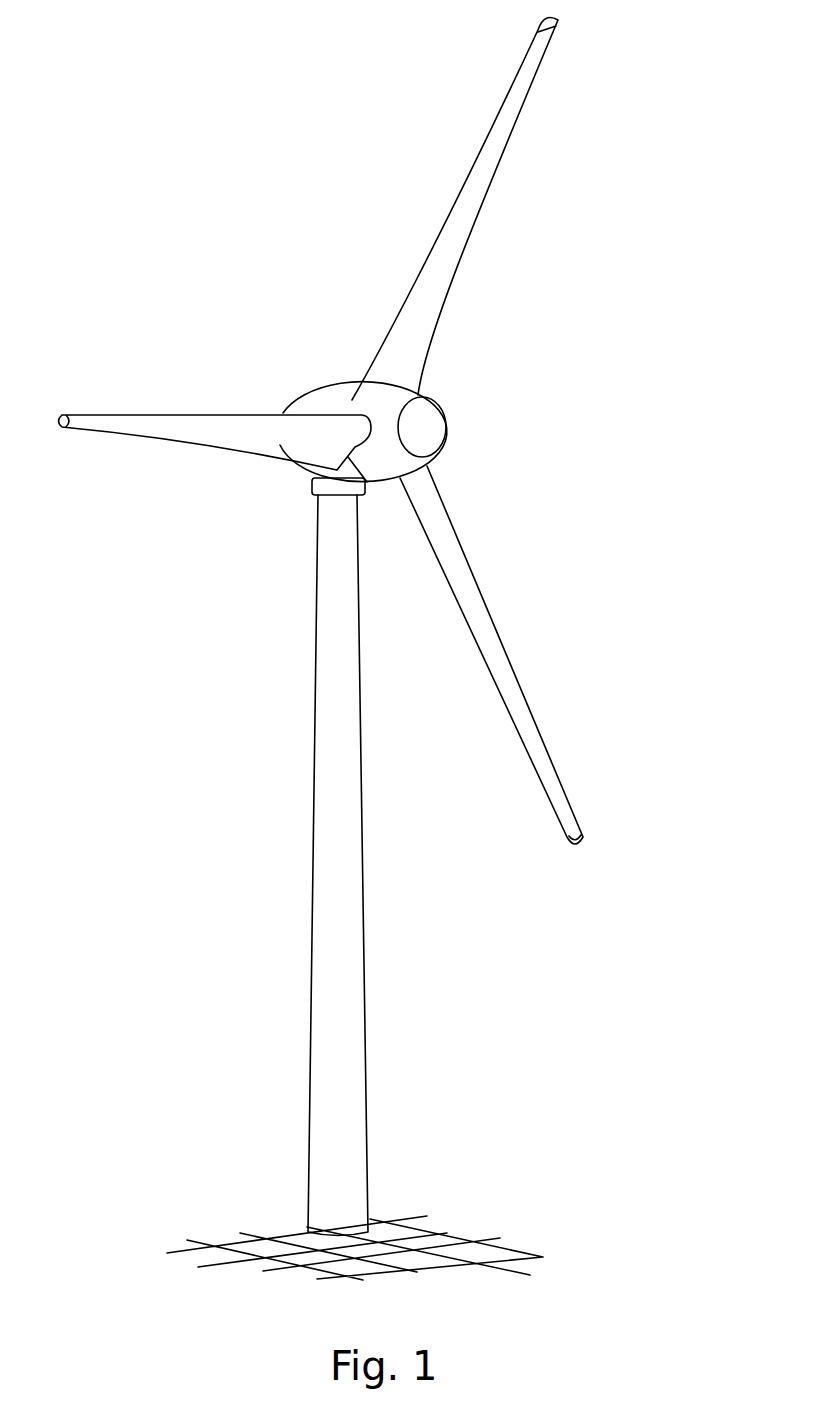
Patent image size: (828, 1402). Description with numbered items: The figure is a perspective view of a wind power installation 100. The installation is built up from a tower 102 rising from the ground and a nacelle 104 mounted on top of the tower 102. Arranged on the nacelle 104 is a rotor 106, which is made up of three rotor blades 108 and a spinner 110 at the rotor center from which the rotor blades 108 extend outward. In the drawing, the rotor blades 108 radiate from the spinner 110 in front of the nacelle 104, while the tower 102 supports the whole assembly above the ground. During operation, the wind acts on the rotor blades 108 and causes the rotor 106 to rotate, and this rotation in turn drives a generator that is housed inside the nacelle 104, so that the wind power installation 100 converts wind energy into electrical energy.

The wind power installation 100 is at (260, 578).
The tower 102 is at (345, 978).
The nacelle 104 is at (332, 400).
The rotor 106 is at (531, 339).
The rotor blades 108 is at (140, 423).
The spinner 110 is at (428, 430).